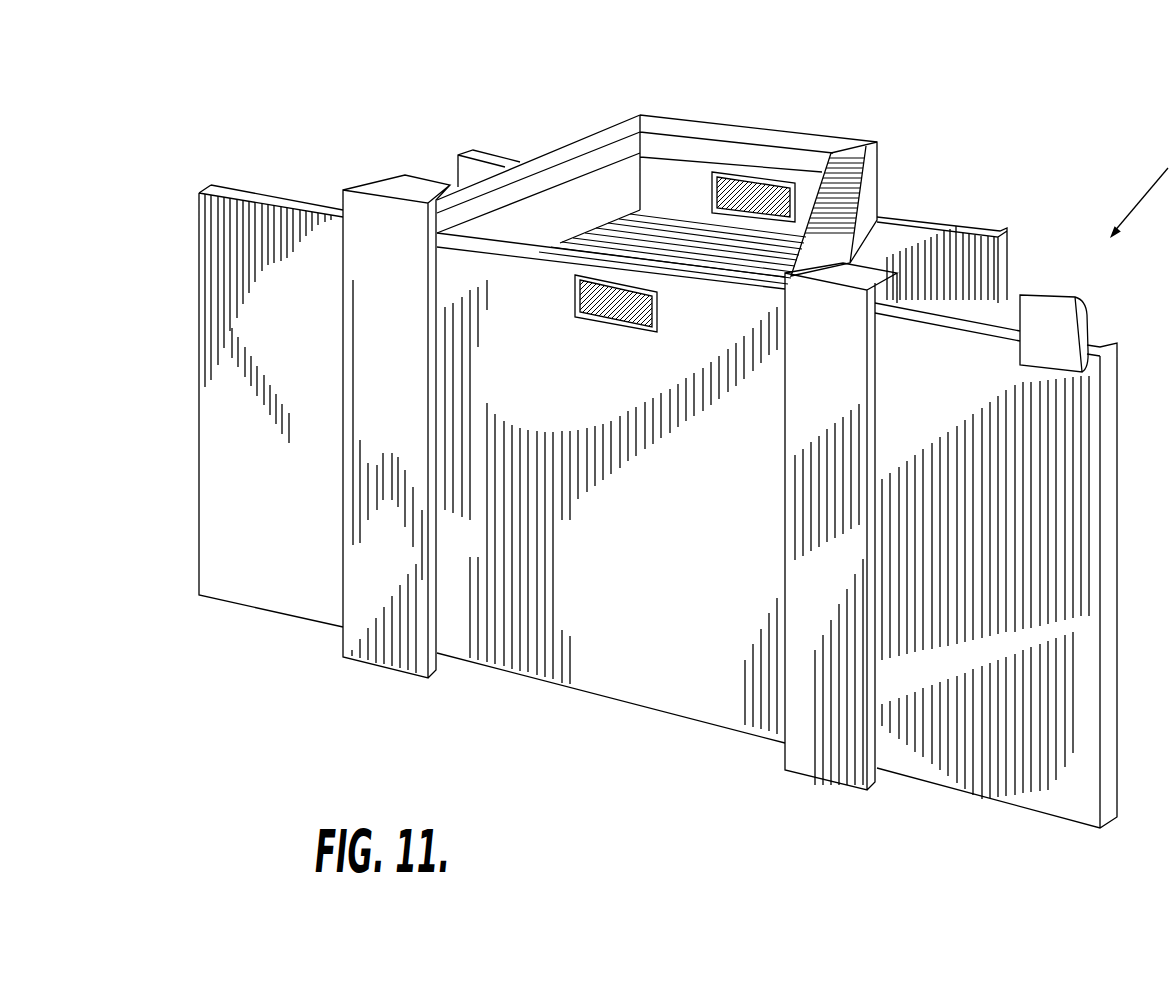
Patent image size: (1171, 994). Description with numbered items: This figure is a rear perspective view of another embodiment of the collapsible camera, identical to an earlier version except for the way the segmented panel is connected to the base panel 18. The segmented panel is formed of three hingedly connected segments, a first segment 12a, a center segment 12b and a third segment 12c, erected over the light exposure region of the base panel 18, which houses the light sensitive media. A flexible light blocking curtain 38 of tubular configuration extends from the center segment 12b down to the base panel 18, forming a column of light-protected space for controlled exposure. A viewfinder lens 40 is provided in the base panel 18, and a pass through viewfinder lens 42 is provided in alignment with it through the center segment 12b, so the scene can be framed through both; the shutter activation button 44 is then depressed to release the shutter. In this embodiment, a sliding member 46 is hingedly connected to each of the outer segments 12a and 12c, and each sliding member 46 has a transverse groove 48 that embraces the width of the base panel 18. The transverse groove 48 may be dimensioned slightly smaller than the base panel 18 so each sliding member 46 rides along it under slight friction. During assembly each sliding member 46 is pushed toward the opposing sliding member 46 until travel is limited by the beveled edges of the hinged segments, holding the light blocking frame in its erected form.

The first panel segment 12a is at (528, 165).
The center panel segment 12b is at (770, 140).
The third panel segment 12c is at (857, 170).
The base panel 18 is at (623, 673).
The light blocking curtain 38 is at (620, 237).
The viewfinder lens 40 is at (603, 287).
The pass through viewfinder lens 42 is at (750, 193).
The shutter activation button 44 is at (1055, 333).
The sliding member 46 is at (393, 652).
The transverse groove 48 is at (343, 618).